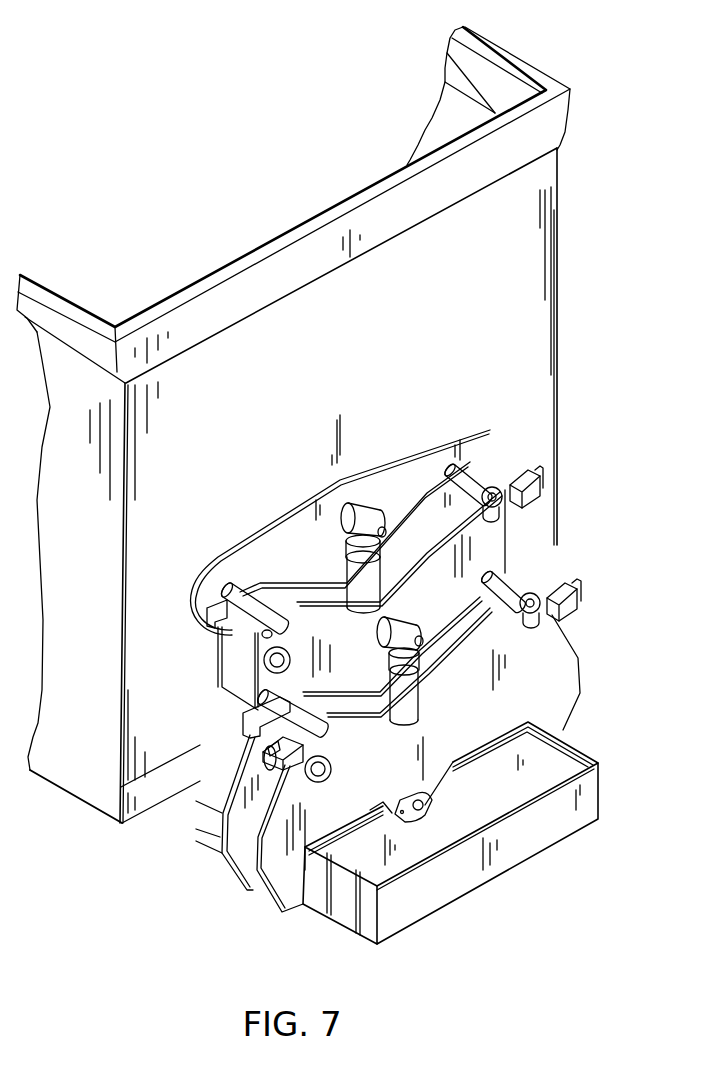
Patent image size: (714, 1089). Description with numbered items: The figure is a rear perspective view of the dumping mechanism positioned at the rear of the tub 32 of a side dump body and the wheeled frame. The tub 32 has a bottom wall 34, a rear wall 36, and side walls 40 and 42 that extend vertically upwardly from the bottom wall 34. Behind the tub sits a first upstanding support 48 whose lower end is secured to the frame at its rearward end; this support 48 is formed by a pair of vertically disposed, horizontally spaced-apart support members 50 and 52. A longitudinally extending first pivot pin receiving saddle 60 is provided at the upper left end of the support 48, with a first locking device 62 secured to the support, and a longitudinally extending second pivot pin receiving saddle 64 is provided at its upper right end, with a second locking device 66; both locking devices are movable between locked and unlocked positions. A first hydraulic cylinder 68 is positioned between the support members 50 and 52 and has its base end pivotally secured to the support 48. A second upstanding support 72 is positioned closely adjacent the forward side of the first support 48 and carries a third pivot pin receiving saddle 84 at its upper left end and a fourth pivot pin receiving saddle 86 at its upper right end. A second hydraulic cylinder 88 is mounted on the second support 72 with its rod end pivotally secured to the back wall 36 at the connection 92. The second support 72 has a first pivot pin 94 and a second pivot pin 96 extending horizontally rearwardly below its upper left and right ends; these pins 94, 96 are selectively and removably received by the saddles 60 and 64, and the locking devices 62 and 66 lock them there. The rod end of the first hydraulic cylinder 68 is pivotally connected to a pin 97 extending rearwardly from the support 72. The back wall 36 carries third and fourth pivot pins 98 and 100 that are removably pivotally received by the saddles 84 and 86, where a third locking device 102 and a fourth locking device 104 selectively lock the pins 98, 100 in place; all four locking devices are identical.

The tub 32 is at (239, 228).
The bottom wall 34 is at (150, 820).
The rear wall 36 is at (281, 377).
The side wall 40 is at (59, 514).
The side wall 42 is at (467, 122).
The first upstanding support 48 is at (255, 853).
The support member 50 is at (457, 746).
The support member 52 is at (240, 785).
The first pivot pin receiving saddle 60 is at (258, 740).
The first locking device 62 is at (332, 769).
The second pivot pin receiving saddle 64 is at (492, 622).
The second locking device 66 is at (577, 608).
The first hydraulic cylinder 68 is at (480, 678).
The second upstanding support 72 is at (518, 541).
The third pivot pin receiving saddle 84 is at (197, 617).
The fourth pivot pin receiving saddle 86 is at (455, 485).
The second hydraulic cylinder 88 is at (363, 573).
The pivotal connection 92 is at (362, 510).
The first pivot pin 94 is at (258, 702).
The second pivot pin 96 is at (475, 623).
The pin 97 is at (418, 640).
The third pivot pin 98 is at (243, 592).
The fourth pivot pin 100 is at (497, 487).
The third locking device 102 is at (290, 661).
The fourth locking device 104 is at (530, 500).